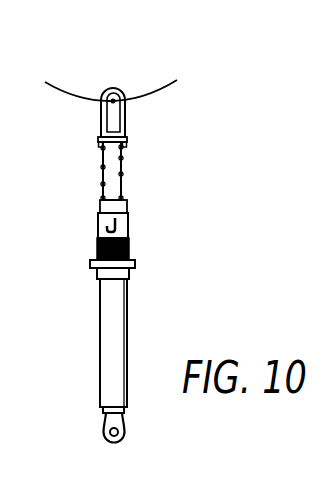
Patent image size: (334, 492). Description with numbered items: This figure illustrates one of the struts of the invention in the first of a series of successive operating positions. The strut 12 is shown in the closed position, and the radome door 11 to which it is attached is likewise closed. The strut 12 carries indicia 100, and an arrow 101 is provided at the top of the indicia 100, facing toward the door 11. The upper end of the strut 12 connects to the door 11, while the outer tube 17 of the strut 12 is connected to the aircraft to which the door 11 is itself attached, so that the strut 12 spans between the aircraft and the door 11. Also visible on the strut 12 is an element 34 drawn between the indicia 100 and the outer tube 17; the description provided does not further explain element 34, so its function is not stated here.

The door 11 is at (150, 80).
The strut 12 is at (130, 265).
The outer tube 17 is at (102, 370).
The lock collar 34 is at (130, 240).
The indicia 100 is at (119, 209).
The arrow 101 is at (98, 230).